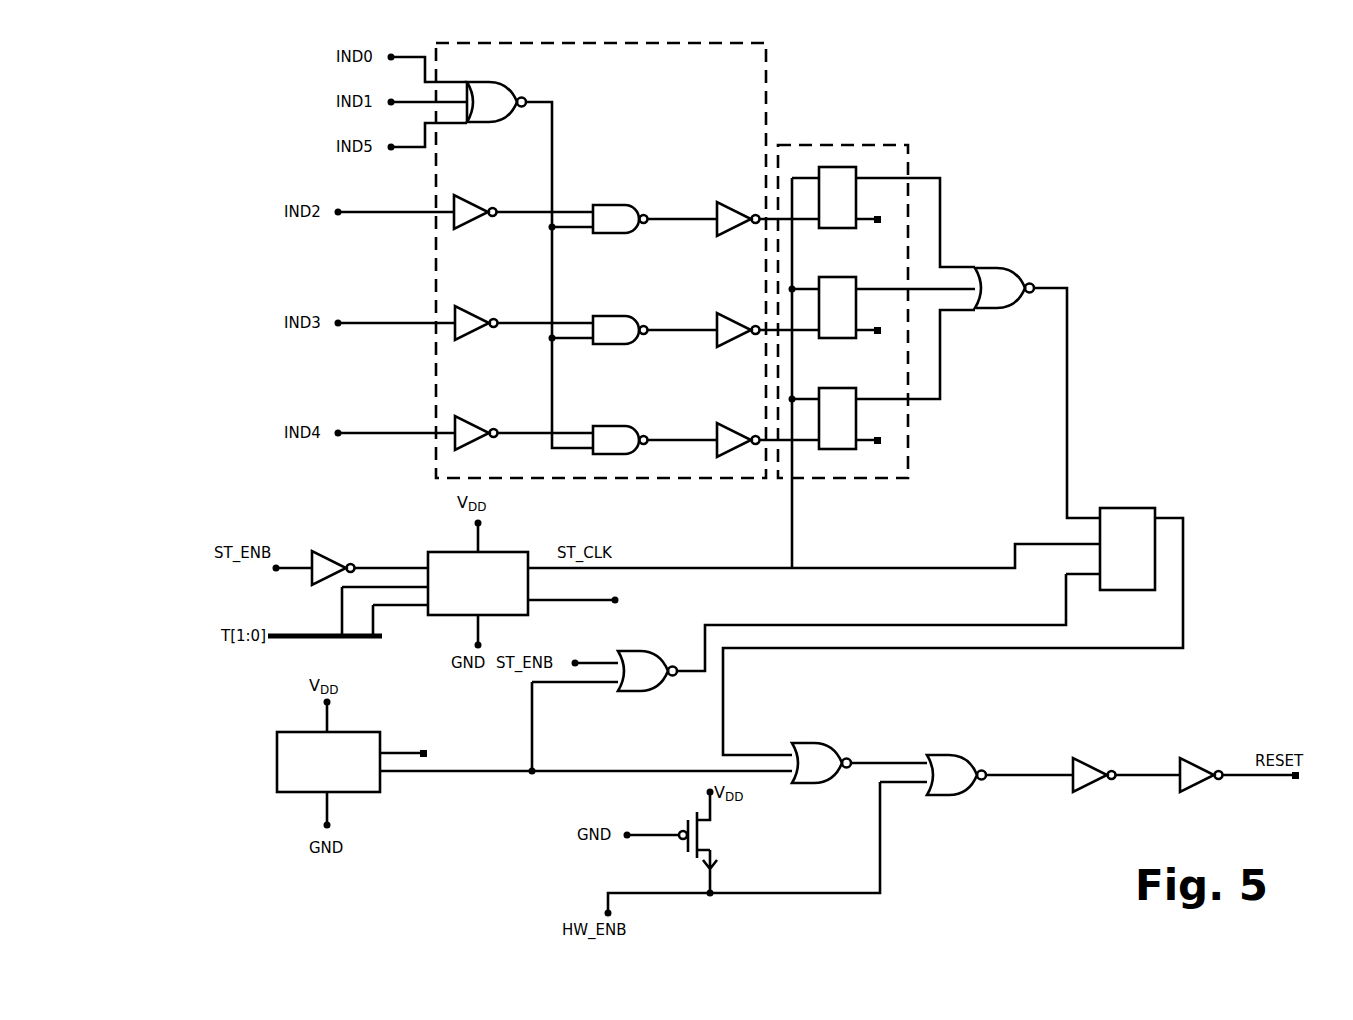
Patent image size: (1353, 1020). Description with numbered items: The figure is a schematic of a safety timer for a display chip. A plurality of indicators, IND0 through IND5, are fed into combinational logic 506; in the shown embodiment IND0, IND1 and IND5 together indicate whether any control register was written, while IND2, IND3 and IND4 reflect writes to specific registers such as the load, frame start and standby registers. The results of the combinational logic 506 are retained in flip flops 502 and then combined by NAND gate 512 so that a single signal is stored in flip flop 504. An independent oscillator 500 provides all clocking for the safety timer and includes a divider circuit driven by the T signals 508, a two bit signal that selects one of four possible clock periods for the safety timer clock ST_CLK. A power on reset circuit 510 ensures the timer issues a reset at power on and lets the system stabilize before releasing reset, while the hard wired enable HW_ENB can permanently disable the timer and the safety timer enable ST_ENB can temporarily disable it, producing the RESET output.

The oscillator 500 is at (493, 553).
The flip flops 502 is at (900, 146).
The flip flop 504 is at (1133, 506).
The combinational logic 506 is at (436, 472).
The T signals 508 is at (355, 640).
The power on reset (POR) circuit 510 is at (360, 792).
The NAND gate 512 is at (1002, 273).